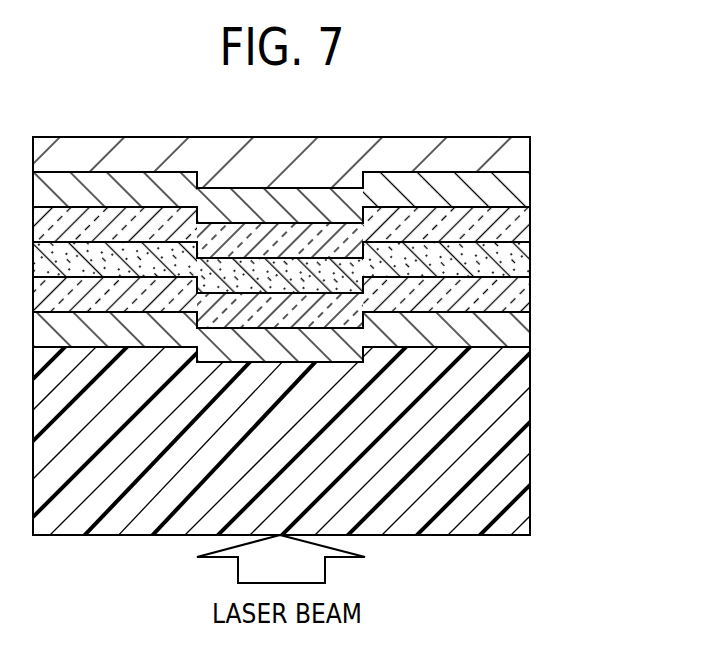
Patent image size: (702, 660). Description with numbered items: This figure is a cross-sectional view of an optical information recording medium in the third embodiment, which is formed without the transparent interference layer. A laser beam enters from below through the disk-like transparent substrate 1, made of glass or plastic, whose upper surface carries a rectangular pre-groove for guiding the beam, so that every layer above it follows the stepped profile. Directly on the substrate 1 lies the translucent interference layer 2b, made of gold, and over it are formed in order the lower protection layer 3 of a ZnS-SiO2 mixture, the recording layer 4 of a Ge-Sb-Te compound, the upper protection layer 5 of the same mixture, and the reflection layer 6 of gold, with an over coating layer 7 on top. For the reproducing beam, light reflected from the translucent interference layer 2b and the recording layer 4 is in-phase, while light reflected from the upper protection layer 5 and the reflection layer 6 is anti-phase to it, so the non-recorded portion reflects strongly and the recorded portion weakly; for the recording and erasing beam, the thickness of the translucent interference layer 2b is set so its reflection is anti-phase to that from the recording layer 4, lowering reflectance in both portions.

The substrate 1 is at (528, 443).
The translucent interference layer 2b is at (518, 329).
The lower protection layer 3 is at (518, 295).
The recording layer 4 is at (518, 260).
The upper protection layer 5 is at (518, 225).
The reflection layer 6 is at (518, 190).
The over coating layer 7 is at (518, 157).